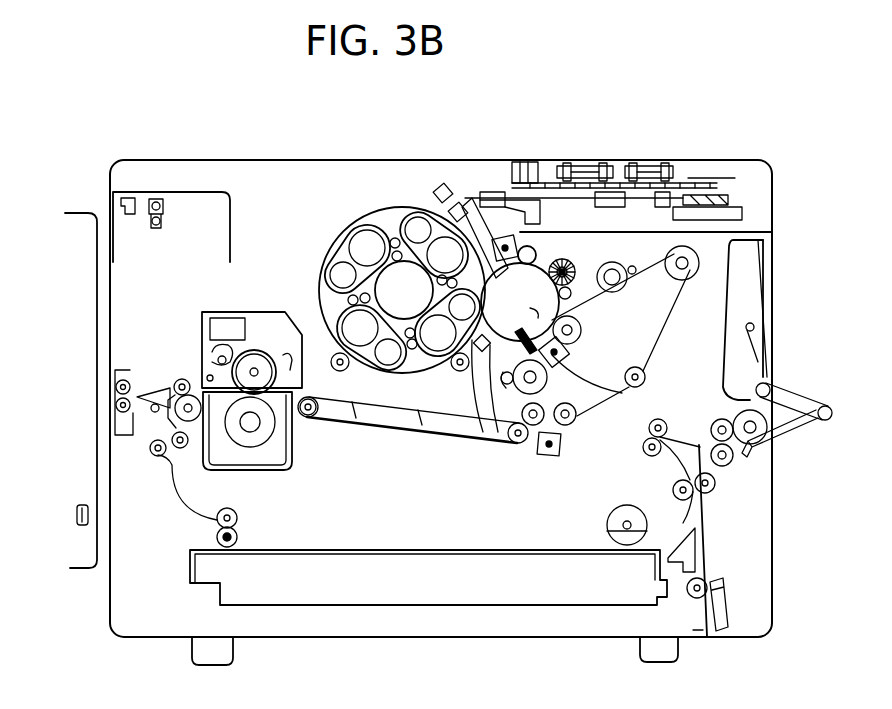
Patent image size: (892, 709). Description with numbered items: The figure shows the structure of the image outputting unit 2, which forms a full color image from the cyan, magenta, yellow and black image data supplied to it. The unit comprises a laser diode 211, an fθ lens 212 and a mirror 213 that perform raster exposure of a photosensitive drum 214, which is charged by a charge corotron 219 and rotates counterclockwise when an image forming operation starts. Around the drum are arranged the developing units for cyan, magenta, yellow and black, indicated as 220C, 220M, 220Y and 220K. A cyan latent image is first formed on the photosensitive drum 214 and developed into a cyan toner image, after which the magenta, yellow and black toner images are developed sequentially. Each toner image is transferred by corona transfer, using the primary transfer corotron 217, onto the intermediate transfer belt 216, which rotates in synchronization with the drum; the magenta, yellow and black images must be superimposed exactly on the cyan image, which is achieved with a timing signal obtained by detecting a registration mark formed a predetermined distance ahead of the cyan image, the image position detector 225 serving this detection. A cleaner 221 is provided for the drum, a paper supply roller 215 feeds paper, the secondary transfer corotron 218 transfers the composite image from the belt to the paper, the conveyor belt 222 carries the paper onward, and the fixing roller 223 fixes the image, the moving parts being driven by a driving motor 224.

The image outputting unit 2 is at (172, 144).
The laser diode 211 is at (686, 176).
The fθ lens 212 is at (616, 190).
The mirror 213 is at (449, 186).
The photosensitive drum 214 is at (515, 347).
The paper supply roller 215 is at (606, 524).
The intermediate transfer belt 216 is at (598, 302).
The primary transfer corotron 217 is at (572, 344).
The secondary transfer corotron 218 is at (563, 455).
The charge corotron 219 is at (502, 232).
The developing unit for yellow 220Y is at (343, 270).
The developing unit for black 220K is at (415, 224).
The developing unit for cyan 220C is at (466, 312).
The developing unit for magenta 220M is at (389, 356).
The cleaner 221 is at (566, 258).
The conveyor belt 222 is at (411, 428).
The fixing roller 223 is at (262, 301).
The driving motor 224 is at (530, 250).
The image position detector 225 is at (634, 388).